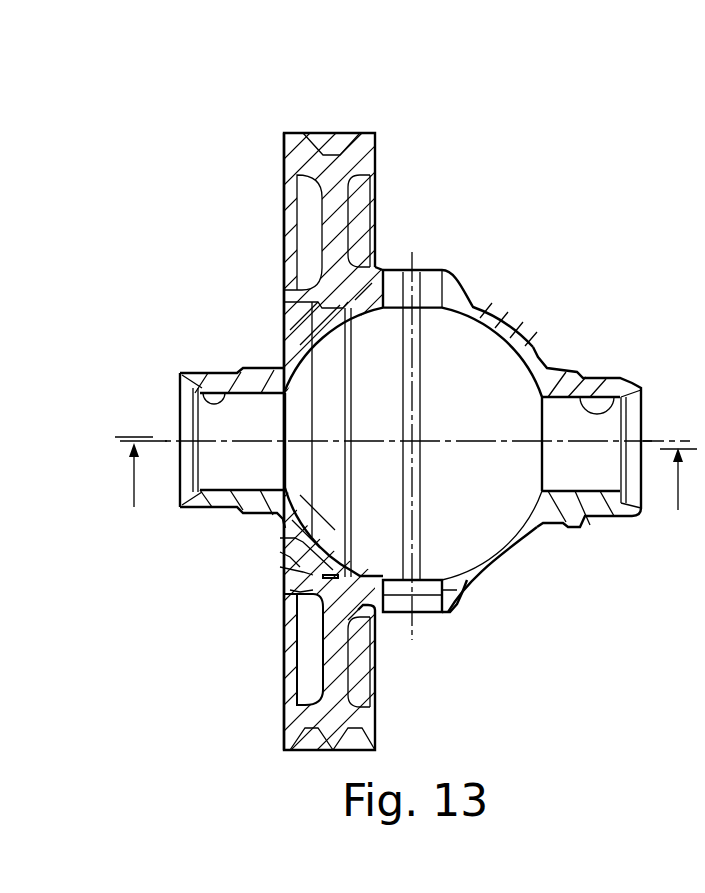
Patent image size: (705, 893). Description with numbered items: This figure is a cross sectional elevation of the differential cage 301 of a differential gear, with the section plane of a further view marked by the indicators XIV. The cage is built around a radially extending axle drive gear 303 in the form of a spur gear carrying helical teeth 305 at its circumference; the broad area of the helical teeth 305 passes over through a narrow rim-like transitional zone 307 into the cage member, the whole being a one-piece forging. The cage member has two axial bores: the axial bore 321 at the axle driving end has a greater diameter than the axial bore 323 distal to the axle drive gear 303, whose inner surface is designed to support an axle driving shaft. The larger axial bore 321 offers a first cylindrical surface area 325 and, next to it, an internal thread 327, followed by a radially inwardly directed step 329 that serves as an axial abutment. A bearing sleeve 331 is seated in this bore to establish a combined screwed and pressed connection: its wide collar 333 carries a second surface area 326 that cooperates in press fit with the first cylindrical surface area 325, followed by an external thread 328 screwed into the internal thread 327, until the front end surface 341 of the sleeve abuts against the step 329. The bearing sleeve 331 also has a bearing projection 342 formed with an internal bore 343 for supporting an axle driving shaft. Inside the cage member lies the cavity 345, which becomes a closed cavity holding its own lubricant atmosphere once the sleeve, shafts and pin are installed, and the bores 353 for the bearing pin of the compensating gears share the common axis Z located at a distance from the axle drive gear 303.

The differential cage 301 is at (382, 430).
The axle drive gear 303 is at (283, 229).
The helical teeth 305 is at (318, 140).
The transitional zone 307 is at (340, 220).
The axial bore 321 is at (292, 322).
The axial bore 323 is at (641, 382).
The first cylindrical surface area 325 is at (290, 568).
The second surface area 326 is at (290, 600).
The internal thread 327 is at (300, 548).
The external thread 328 is at (375, 647).
The step 329 is at (357, 303).
The bearing sleeve 331 is at (237, 380).
The collar 333 is at (310, 545).
The front end surface 341 is at (356, 314).
The bearing projection 342 is at (183, 508).
The internal bore 343 is at (193, 398).
The cavity 345 is at (500, 495).
The bores 353 is at (420, 617).
The common axis Z is at (455, 598).
The section line XIV is at (405, 458).